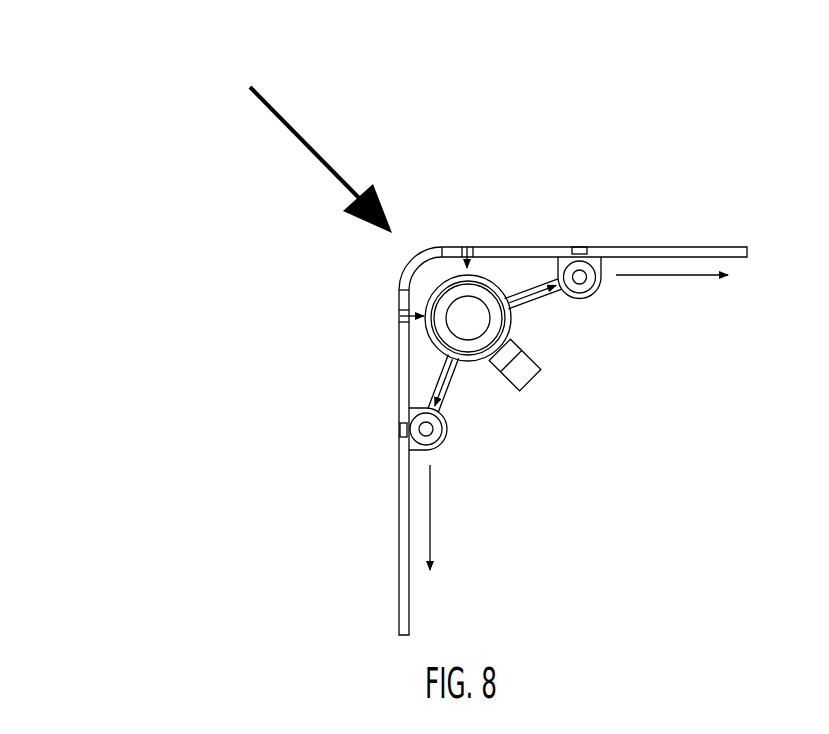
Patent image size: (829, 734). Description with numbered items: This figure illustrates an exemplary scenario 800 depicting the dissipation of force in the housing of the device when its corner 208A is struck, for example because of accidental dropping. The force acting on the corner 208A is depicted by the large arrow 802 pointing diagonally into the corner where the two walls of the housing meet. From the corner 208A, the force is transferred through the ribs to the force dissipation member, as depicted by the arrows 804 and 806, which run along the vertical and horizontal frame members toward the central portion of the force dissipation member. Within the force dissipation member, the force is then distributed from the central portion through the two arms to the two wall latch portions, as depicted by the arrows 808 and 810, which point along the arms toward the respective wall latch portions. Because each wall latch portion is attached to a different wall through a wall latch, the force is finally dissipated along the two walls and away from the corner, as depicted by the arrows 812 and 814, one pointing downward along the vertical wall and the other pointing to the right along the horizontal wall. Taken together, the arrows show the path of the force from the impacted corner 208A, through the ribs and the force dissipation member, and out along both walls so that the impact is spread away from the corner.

The exemplary scenario 800 is at (165, 83).
The arrow depicting force 802 is at (308, 148).
The corner 208A is at (413, 258).
The arrow depicting force transfer 804 is at (418, 328).
The arrow depicting force transfer 806 is at (467, 250).
The arrow depicting force distribution 808 is at (433, 378).
The arrow depicting force distribution 810 is at (537, 288).
The arrow depicting force dissipation 812 is at (432, 523).
The arrow depicting force dissipation 814 is at (647, 276).